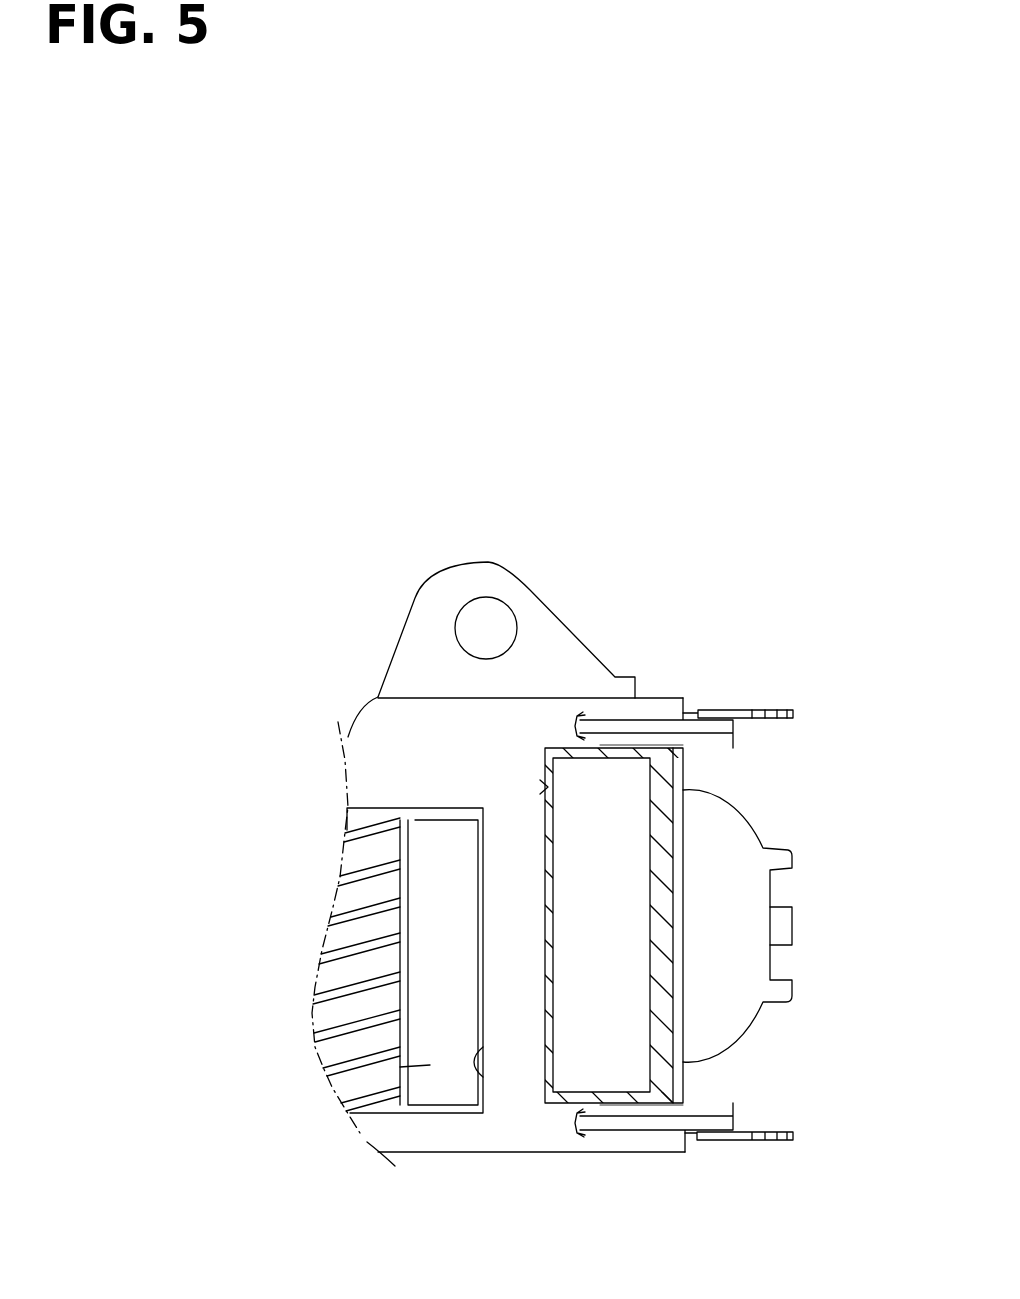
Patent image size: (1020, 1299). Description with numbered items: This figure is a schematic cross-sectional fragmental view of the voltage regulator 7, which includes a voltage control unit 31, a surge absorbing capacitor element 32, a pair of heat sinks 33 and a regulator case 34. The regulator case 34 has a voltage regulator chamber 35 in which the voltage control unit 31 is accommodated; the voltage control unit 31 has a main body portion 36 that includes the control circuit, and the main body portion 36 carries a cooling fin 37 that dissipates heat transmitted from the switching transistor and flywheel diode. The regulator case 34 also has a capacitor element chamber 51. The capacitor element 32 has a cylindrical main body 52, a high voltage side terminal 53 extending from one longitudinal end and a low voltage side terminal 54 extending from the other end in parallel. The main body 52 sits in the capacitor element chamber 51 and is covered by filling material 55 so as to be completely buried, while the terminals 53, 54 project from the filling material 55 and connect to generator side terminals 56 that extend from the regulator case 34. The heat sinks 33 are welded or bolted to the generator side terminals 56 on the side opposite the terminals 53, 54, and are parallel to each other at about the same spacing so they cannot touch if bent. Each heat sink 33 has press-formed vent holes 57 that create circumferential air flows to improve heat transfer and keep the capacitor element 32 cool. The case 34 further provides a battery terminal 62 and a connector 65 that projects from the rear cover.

The voltage regulator 7 is at (598, 498).
The voltage control unit 31 is at (447, 1122).
The surge absorbing capacitor element 32 is at (546, 787).
The heat sink 33 is at (790, 710).
The regulator case 34 is at (410, 723).
The voltage regulator chamber 35 is at (483, 1077).
The main body portion 36 is at (400, 1067).
The cooling fin 37 is at (347, 922).
The capacitor element chamber 51 is at (563, 1045).
The cylindrical main body 52 is at (627, 862).
The high voltage side terminal 53 is at (733, 741).
The low voltage side terminal 54 is at (722, 1100).
The filling material 55 is at (658, 1013).
The generator side terminal 56 is at (640, 745).
The vent hole 57 is at (785, 707).
The battery terminal 62 is at (483, 583).
The connector 65 is at (743, 905).